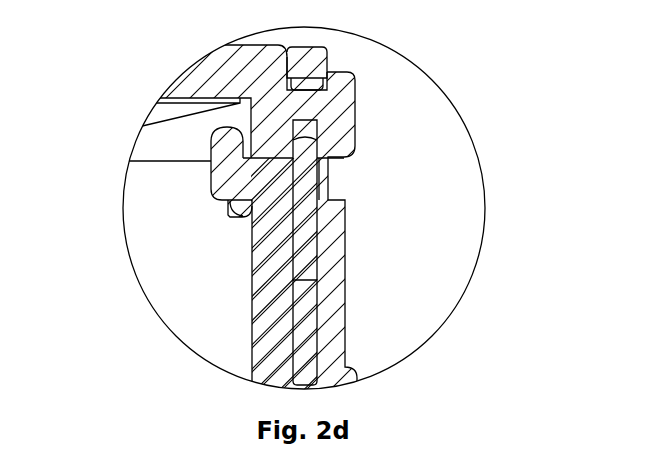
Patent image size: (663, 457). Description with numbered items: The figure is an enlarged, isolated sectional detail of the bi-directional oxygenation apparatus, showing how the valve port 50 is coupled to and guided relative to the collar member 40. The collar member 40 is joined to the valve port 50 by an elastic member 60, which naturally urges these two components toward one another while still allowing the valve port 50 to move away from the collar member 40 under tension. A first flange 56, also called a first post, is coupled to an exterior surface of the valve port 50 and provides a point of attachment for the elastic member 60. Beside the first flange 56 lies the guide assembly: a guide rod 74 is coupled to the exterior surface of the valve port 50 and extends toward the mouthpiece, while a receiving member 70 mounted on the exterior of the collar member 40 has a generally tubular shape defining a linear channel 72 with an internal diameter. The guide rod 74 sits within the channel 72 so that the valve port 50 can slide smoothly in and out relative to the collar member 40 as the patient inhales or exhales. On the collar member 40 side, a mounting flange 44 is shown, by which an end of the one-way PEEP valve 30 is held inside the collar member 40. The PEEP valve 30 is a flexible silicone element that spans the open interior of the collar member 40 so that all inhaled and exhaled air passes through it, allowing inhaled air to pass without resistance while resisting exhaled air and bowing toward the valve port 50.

The one-way PEEP valve 30 is at (165, 115).
The collar member 40 is at (263, 272).
The mounting flange 44 is at (207, 140).
The valve port 50 is at (240, 60).
The first flange 56 is at (338, 98).
The elastic member 60 is at (311, 56).
The receiving member 70 is at (345, 288).
The channel 72 is at (305, 338).
The guide rod 74 is at (302, 184).